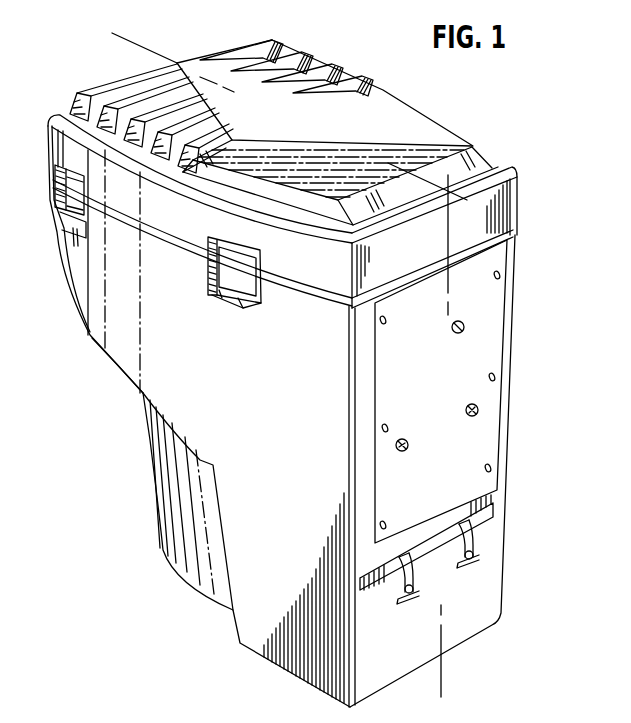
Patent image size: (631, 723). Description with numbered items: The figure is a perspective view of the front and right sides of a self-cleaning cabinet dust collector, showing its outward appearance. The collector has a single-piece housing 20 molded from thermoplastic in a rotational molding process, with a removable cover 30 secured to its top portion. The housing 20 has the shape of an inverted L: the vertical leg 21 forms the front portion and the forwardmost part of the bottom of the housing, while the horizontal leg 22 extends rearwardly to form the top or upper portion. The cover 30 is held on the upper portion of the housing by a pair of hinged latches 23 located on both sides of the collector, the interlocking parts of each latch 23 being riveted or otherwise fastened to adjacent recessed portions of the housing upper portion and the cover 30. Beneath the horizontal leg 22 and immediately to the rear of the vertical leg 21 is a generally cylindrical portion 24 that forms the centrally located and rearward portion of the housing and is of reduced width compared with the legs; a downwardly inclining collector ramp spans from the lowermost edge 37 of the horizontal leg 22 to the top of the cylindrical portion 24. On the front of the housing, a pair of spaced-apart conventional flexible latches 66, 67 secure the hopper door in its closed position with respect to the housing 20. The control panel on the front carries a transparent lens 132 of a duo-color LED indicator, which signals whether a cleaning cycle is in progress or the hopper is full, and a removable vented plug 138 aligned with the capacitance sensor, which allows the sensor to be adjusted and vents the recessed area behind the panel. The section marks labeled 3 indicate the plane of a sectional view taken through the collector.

The section line 3- 3 is at (120, 43).
The housing 20 is at (88, 360).
The vertical leg 21 is at (505, 428).
The horizontal leg 22 is at (65, 252).
The hinged latch 23 is at (72, 193).
The cylindrical portion 24 is at (160, 515).
The removable cover 30 is at (483, 124).
The lowermost edge 37 is at (114, 367).
The flexible latch 66 is at (412, 573).
The flexible latch 67 is at (468, 540).
The transparent lens 132 is at (465, 326).
The vented plug 138 is at (478, 406).